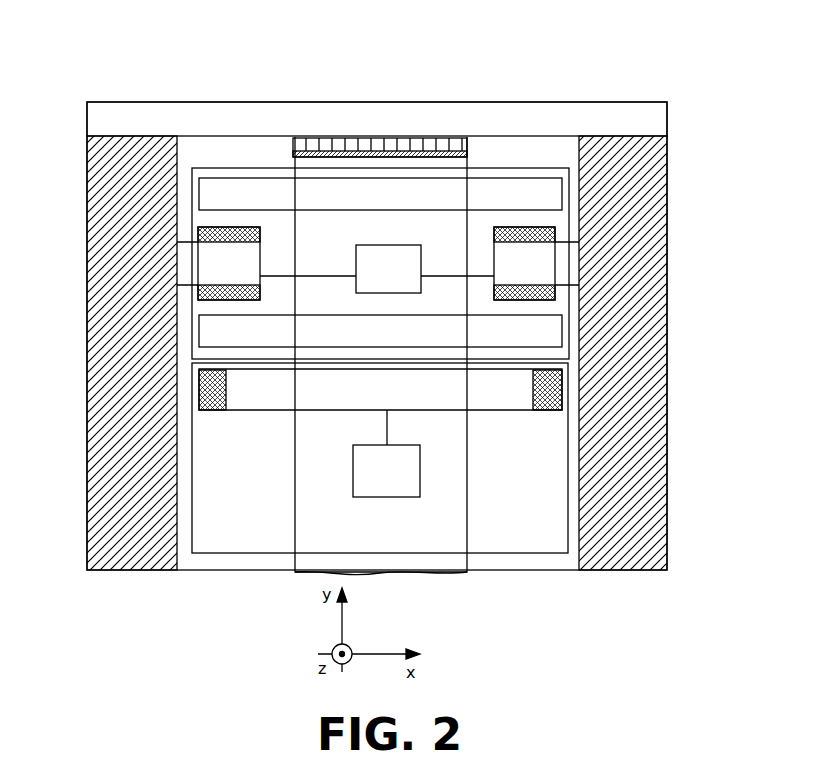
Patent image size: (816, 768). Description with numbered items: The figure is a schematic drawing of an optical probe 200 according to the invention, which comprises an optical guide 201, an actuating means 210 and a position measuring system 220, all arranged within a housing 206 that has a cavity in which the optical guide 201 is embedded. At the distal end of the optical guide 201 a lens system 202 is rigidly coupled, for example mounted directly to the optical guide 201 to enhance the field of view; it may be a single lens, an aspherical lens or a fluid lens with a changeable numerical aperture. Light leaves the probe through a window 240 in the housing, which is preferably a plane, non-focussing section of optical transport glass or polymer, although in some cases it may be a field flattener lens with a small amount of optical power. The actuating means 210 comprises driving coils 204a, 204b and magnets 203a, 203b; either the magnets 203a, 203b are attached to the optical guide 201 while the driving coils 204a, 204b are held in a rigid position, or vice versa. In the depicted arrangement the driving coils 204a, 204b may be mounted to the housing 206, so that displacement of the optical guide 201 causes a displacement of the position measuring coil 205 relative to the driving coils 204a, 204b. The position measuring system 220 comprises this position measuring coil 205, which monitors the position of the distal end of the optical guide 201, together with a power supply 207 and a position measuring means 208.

The optical probe 200 is at (628, 62).
The window 240 is at (354, 102).
The housing 206 is at (662, 193).
The actuating means 210 is at (543, 168).
The position measuring system 220 is at (238, 554).
The optical guide 201 is at (455, 574).
The lens system 202 is at (467, 148).
The magnet 203a is at (241, 190).
The magnet 203b is at (276, 326).
The driving coil 204a is at (257, 262).
The driving coil 204b is at (496, 262).
The power supply 207 is at (406, 245).
The position measuring coil 205 is at (258, 411).
The position measuring means 208 is at (353, 460).